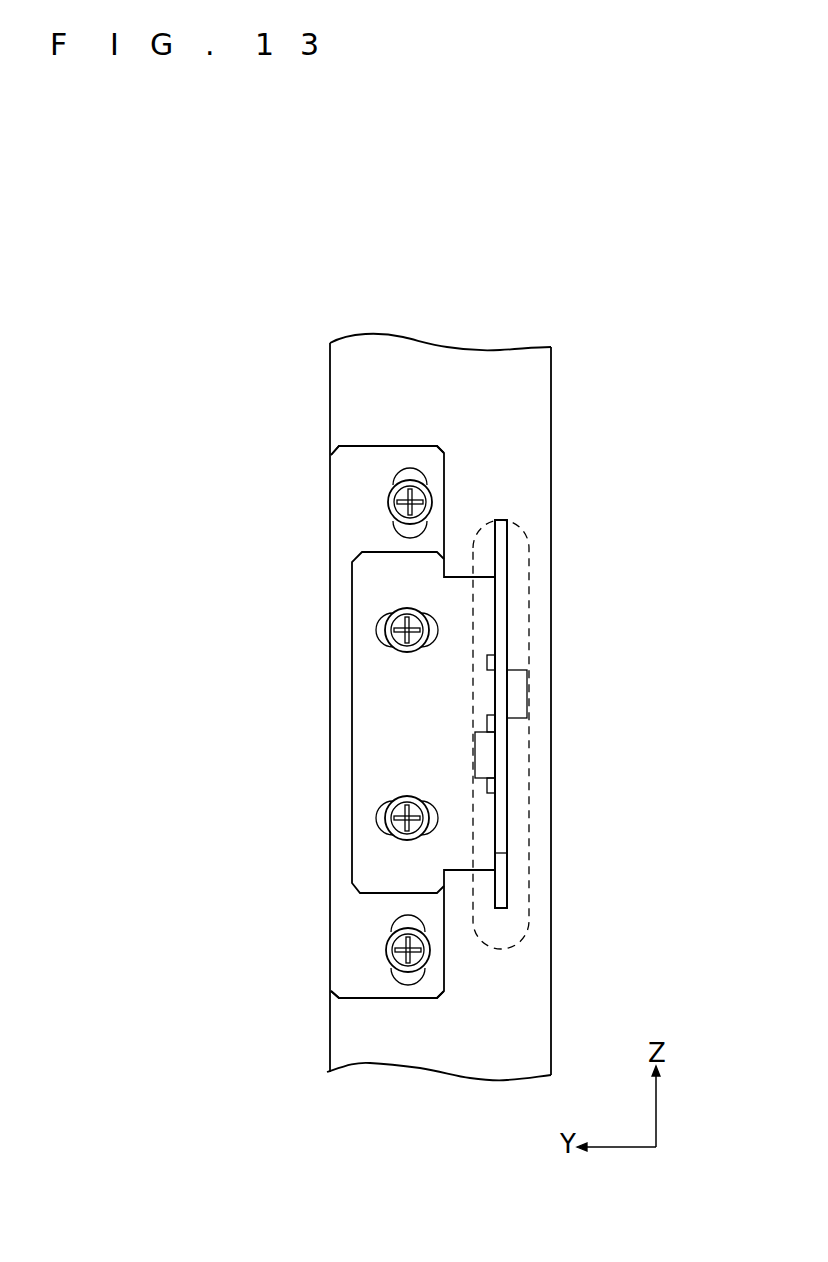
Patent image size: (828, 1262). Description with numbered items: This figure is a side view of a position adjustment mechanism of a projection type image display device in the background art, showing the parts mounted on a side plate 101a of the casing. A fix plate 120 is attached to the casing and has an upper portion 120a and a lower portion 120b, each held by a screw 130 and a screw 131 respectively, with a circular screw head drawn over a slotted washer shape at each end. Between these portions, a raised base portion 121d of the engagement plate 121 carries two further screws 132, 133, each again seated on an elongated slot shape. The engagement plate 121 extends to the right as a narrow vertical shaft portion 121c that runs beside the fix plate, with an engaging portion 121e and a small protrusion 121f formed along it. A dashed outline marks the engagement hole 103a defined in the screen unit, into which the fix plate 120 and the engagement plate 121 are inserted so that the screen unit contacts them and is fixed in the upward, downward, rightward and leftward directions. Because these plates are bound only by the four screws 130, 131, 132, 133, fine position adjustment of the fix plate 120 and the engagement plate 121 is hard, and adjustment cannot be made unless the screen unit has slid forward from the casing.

The side plate of housing 101a is at (522, 388).
The fix plate 120 is at (345, 505).
The upper attachment portion of bracket 120a is at (395, 470).
The lower attachment portion of bracket 120b is at (400, 987).
The engagement plate 121 is at (507, 822).
The shaft portion of link member 121c is at (501, 518).
The base portion 121d is at (380, 738).
The engaging portion 121e is at (447, 633).
The protrusion 121f is at (433, 801).
The engagement hole 103a is at (529, 597).
The screw 130 is at (432, 500).
The screw 131 is at (386, 956).
The screw 132 is at (373, 630).
The screw 133 is at (373, 818).